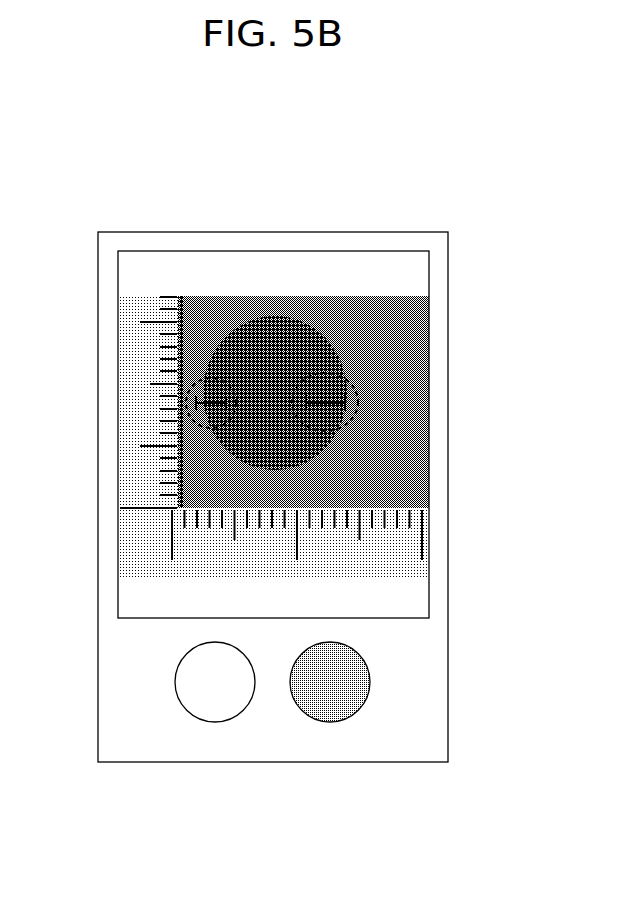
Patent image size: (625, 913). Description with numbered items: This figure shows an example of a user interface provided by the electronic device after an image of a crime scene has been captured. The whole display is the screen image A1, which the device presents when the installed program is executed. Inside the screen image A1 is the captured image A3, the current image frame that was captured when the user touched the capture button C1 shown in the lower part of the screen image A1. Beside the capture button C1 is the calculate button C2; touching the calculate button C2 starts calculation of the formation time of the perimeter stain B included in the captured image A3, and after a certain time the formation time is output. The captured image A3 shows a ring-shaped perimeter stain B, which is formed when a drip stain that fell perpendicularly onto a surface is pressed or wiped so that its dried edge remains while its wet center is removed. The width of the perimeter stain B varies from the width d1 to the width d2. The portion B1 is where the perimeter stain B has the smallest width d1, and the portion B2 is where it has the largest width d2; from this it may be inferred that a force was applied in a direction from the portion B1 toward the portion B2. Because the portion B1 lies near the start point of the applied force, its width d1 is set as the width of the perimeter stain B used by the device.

The screen image A1 is at (272, 232).
The captured image A3 is at (272, 296).
The perimeter stain B is at (333, 350).
The portion where the perimeter stain has the smallest width B1 is at (186, 384).
The portion where the perimeter stain has the largest width B2 is at (346, 384).
The width of the portion B1 d1 is at (200, 424).
The width of the portion B2 d2 is at (346, 422).
The capture button C1 is at (215, 722).
The calculate button C2 is at (330, 722).